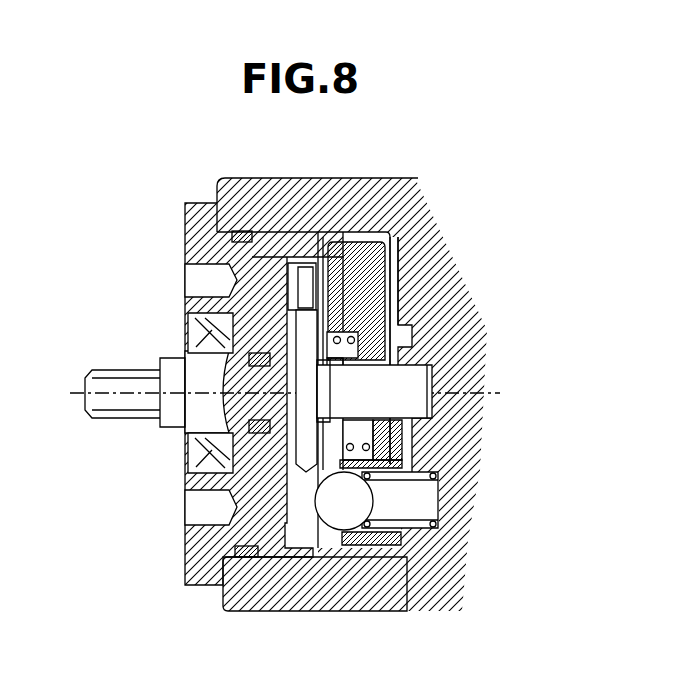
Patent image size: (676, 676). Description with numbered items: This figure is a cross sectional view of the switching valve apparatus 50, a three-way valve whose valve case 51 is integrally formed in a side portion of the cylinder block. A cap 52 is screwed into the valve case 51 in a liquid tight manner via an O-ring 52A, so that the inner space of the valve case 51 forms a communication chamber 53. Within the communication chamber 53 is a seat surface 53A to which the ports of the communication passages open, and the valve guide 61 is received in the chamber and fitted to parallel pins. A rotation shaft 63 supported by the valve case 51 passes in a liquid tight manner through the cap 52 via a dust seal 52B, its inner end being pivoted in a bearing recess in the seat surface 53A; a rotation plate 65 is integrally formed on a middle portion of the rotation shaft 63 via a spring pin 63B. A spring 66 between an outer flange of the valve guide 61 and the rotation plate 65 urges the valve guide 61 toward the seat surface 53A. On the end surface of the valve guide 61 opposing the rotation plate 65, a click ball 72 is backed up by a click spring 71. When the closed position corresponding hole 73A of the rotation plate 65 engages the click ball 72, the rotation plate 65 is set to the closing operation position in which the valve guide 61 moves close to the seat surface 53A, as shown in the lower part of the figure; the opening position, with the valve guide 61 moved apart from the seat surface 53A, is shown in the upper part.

The switching valve apparatus 50 is at (116, 232).
The valve case 51 is at (325, 186).
The cap 52 is at (205, 570).
The O-ring 52A is at (245, 557).
The dust seal 52B is at (190, 322).
The communication chamber 53 is at (400, 419).
The seat surface 53A is at (412, 222).
The valve guide 61 is at (412, 436).
The rotation shaft 63 is at (103, 370).
The spring pin 63B is at (384, 340).
The rotation plate 65 is at (295, 479).
The spring 66 is at (380, 470).
The click spring 71 is at (428, 522).
The click ball 72 is at (352, 503).
The closed position corresponding hole 73A is at (310, 506).